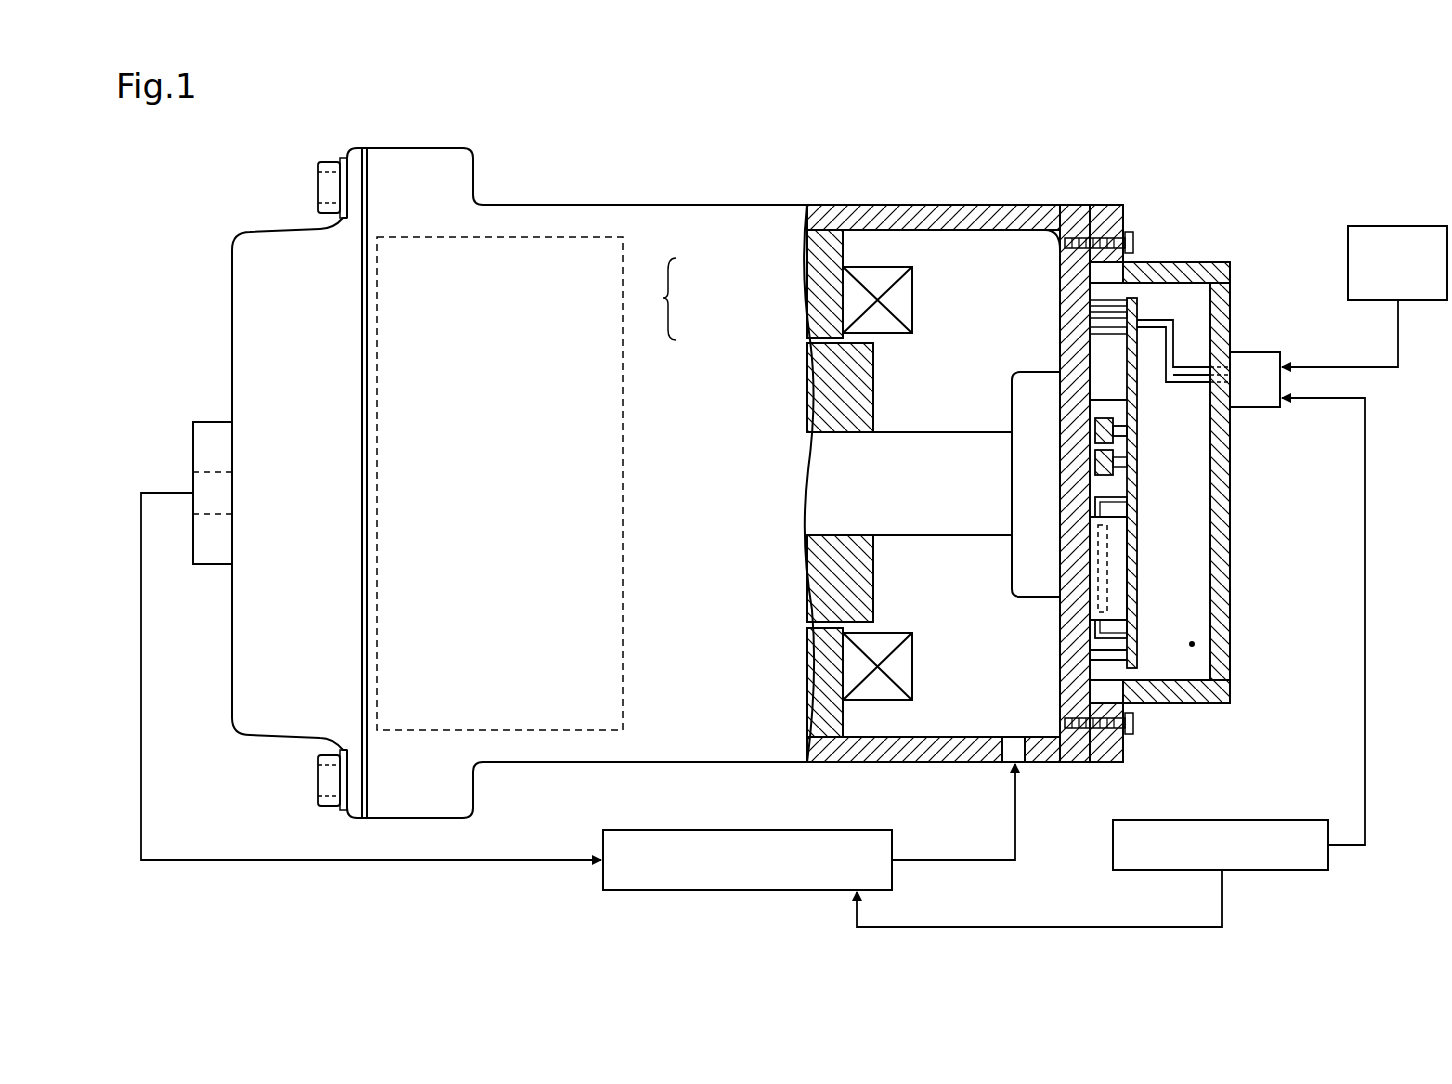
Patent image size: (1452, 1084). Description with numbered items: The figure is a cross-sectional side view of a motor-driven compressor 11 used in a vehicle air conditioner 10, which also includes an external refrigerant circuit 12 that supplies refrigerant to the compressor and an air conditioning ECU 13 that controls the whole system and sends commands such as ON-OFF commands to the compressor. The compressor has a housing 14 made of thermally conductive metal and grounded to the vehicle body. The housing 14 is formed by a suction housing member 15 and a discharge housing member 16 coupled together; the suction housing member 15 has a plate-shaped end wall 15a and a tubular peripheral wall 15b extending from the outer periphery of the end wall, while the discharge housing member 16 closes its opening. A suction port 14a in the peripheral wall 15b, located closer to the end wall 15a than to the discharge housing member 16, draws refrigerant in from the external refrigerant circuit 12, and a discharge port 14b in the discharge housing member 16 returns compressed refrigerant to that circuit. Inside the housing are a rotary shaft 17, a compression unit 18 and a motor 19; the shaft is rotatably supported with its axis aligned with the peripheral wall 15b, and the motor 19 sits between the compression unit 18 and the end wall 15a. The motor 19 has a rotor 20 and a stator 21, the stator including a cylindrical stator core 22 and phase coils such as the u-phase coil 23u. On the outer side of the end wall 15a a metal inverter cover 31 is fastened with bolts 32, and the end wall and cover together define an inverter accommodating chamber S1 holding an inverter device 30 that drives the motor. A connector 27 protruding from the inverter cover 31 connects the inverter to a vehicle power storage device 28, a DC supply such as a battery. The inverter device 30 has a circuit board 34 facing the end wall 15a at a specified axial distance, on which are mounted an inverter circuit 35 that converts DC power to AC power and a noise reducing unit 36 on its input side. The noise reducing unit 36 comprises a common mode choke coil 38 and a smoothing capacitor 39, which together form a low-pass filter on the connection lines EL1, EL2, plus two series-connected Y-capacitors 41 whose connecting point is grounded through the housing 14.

The vehicle air conditioner 10 is at (1283, 188).
The motor-driven compressor 11 is at (258, 452).
The external refrigerant circuit 12 is at (850, 830).
The air conditioning ECU 13 is at (1256, 820).
The housing 14 is at (774, 456).
The suction port 14a is at (1010, 748).
The discharge port 14b is at (193, 493).
The suction housing member 15 is at (410, 148).
The end wall 15a is at (1066, 252).
The peripheral wall 15b is at (931, 212).
The discharge housing member 16 is at (350, 148).
The rotary shaft 17 is at (813, 478).
The compression unit 18 is at (533, 237).
The motor 19 is at (982, 446).
The rotor 20 is at (823, 385).
The stator 21 is at (770, 428).
The stator core 22 is at (822, 268).
The u-phase coil 23u is at (858, 300).
The connector 27 is at (1268, 352).
The power storage device 28 is at (1412, 226).
The inverter device 30 is at (1114, 459).
The inverter cover 31 is at (1232, 284).
The bolts 32 is at (1131, 243).
The circuit board 34 is at (1139, 526).
The inverter circuit 35 is at (1023, 578).
The noise reducing unit 36 is at (1088, 346).
The common mode choke coil 38 is at (1095, 425).
The smoothing capacitor 39 is at (1120, 466).
The Y-capacitors 41 is at (1094, 440).
The connection line EL1 is at (1193, 388).
The connection line EL2 is at (1185, 362).
The inverter accommodating chamber S1 is at (1192, 644).